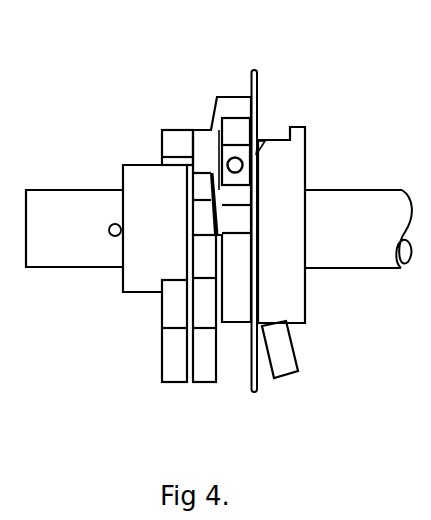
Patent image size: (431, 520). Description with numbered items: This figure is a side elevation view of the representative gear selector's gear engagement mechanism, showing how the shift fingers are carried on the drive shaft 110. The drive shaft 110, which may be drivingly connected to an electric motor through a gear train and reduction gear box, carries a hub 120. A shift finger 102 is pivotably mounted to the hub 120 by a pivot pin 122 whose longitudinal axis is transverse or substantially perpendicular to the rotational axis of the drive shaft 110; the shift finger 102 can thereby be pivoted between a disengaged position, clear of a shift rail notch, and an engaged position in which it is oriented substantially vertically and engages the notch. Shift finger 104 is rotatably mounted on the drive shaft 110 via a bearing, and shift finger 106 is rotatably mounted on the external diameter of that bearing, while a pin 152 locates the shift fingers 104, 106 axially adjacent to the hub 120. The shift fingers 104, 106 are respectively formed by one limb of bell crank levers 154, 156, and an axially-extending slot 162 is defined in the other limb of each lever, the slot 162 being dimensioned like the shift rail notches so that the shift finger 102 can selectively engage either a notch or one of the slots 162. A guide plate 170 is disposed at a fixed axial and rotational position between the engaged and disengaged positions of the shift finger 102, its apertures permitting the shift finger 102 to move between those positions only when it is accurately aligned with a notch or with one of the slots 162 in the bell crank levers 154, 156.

The shift finger 102 is at (282, 365).
The shift finger 104 is at (203, 368).
The shift finger 106 is at (170, 367).
The drive shaft 110 is at (52, 207).
The hub 120 is at (290, 158).
The pivot pin 122 is at (260, 148).
The pin 152 is at (113, 237).
The bell crank lever 154 is at (210, 157).
The bell crank lever 156 is at (172, 145).
The axially-extending slot 162 is at (235, 132).
The guide plate 170 is at (259, 72).